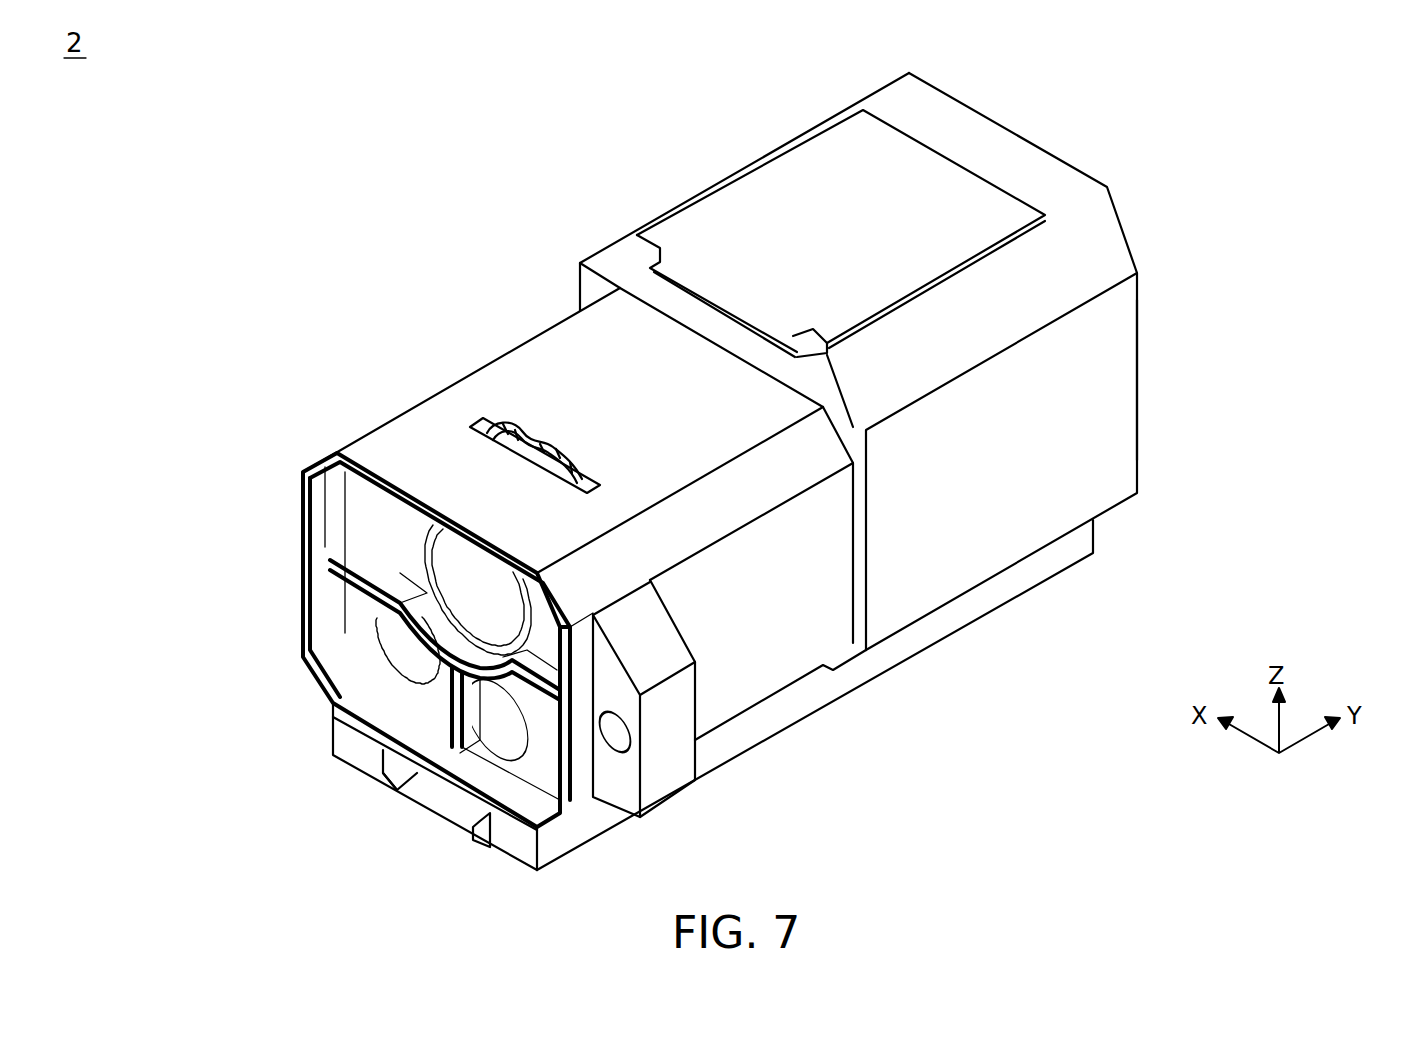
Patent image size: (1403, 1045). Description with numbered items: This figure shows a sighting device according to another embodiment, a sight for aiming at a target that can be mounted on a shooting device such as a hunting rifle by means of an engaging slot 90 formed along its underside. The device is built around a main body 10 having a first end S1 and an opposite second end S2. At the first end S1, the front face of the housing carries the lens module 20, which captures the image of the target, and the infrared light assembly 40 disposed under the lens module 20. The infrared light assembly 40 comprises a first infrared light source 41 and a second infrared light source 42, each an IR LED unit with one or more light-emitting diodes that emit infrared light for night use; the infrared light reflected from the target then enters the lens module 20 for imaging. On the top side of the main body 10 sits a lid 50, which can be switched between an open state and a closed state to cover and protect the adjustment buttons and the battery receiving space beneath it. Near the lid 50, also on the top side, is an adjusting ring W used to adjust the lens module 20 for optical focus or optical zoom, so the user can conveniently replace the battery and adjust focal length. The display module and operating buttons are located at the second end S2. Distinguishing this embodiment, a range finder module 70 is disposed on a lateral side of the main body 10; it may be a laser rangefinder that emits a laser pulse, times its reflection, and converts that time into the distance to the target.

The main body 10 is at (972, 500).
The lens module 20 is at (433, 545).
The infrared light assembly 40 is at (214, 628).
The first infrared light source 41 is at (388, 638).
The second infrared light source 42 is at (525, 705).
The lid 50 is at (767, 195).
The range finder module 70 is at (675, 713).
The engaging slot 90 is at (433, 783).
The adjusting ring W is at (510, 428).
The first end S1 is at (302, 586).
The second end S2 is at (1137, 385).